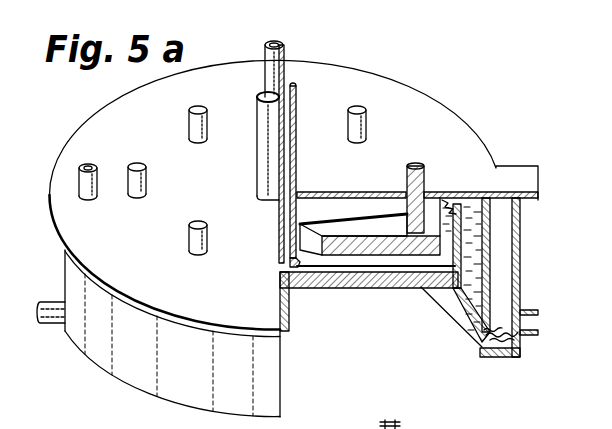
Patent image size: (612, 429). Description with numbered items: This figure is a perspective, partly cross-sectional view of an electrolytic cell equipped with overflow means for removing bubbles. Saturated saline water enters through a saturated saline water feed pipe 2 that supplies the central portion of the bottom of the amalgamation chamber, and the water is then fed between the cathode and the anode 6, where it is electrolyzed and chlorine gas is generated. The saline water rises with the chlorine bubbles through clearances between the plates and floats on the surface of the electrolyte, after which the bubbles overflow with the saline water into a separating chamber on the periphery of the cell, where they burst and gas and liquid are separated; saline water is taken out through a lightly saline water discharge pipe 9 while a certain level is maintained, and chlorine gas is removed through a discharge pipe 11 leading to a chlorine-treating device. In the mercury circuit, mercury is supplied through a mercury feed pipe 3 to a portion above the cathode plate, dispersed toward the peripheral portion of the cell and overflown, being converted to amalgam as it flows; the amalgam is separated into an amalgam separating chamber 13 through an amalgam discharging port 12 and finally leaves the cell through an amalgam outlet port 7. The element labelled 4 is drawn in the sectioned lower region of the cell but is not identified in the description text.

The saturated saline water feed pipe 2 is at (297, 88).
The mercury feed pipe 3 is at (280, 42).
The bottom plate 4 is at (318, 283).
The anode 6 is at (417, 167).
The amalgam outlet port 7 is at (537, 319).
The lightly saline water discharge pipe 9 is at (388, 420).
The discharge pipe 11 is at (83, 168).
The amalgam discharging port 12 is at (456, 279).
The amalgam separating chamber 13 is at (490, 337).